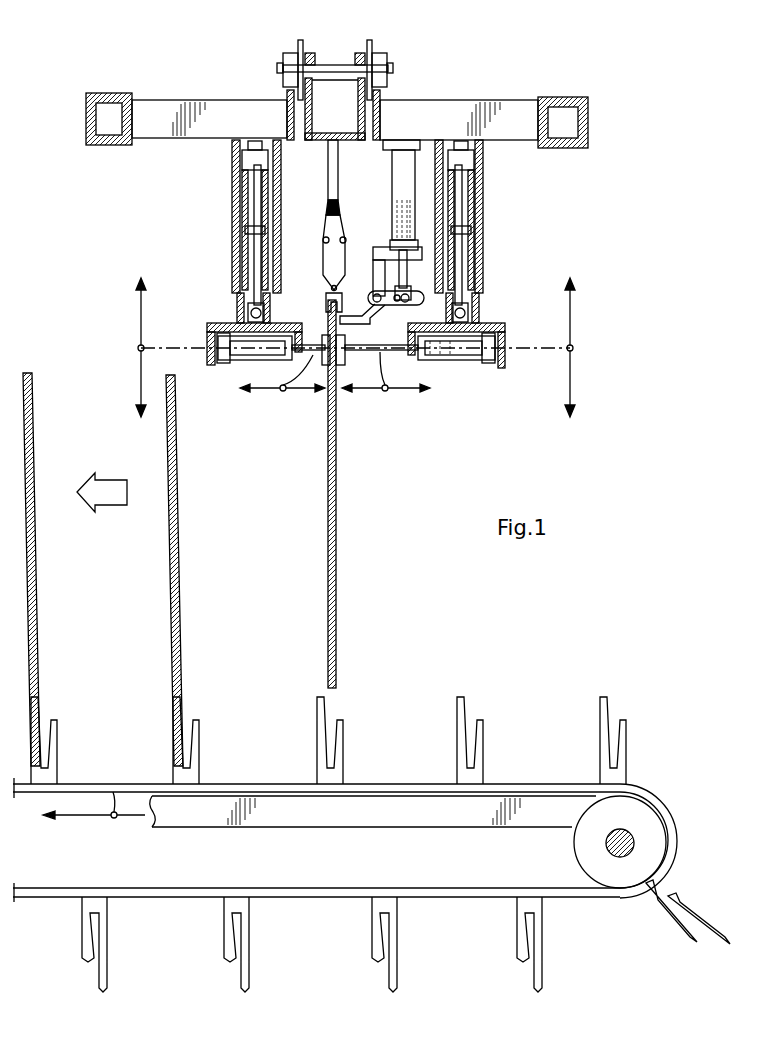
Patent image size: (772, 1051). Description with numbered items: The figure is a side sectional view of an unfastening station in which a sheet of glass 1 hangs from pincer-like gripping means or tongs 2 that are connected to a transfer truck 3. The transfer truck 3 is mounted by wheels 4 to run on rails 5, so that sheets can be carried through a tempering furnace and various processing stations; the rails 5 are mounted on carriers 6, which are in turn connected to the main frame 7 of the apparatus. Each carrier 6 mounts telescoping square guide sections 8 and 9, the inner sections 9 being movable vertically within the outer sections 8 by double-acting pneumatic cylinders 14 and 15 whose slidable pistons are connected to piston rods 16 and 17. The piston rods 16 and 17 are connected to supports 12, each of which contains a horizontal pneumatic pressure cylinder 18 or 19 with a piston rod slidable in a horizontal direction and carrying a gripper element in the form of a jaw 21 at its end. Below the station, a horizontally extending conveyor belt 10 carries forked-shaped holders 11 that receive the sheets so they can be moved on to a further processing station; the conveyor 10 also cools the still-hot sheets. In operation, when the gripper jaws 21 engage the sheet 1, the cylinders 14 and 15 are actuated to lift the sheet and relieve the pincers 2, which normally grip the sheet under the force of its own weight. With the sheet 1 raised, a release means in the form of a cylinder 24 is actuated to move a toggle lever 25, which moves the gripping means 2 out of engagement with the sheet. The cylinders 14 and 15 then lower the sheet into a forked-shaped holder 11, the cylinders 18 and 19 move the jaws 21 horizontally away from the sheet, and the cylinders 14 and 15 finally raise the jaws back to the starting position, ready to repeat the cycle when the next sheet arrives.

The sheet of glass 1 is at (328, 466).
The pincer-like gripping means 2 is at (323, 259).
The transfer truck 3 is at (320, 142).
The wheels 4 is at (290, 60).
The rails 5 is at (287, 117).
The carriers 6 is at (218, 106).
The main frame 7 is at (86, 116).
The square guide sections 8 is at (232, 273).
The square guide sections 9 is at (238, 305).
The conveyor belt 10 is at (262, 794).
The forked-shaped holders 11 is at (336, 746).
The supports 12 is at (210, 326).
The double-acting pneumatic cylinder 14 is at (459, 186).
The double-acting pneumatic cylinder 15 is at (252, 186).
The piston rod 16 is at (462, 255).
The piston rod 17 is at (253, 250).
The pneumatic pressure cylinder 18 is at (470, 353).
The pneumatic pressure cylinder 19 is at (243, 352).
The gripper jaw 21 is at (325, 345).
The cylinder 24 is at (400, 182).
The toggle lever 25 is at (365, 320).